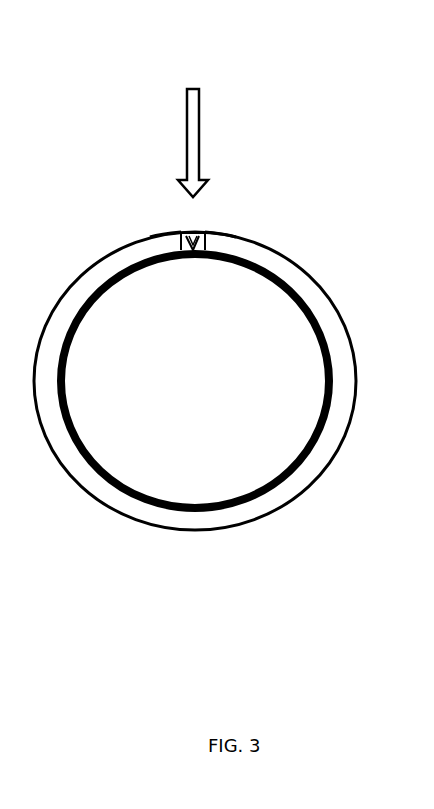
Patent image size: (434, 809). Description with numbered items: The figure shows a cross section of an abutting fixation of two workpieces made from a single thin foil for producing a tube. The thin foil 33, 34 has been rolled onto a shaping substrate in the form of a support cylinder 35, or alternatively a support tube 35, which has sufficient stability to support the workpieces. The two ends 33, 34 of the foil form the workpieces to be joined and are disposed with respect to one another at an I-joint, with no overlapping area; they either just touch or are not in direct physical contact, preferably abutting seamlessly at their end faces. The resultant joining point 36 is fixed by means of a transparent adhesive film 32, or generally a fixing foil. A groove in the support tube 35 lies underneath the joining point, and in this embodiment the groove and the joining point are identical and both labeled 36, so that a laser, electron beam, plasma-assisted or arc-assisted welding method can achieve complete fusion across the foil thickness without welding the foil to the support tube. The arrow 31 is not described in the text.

The applied force / pressing direction 31 is at (205, 112).
The transparent adhesive film 32 is at (188, 232).
The end of thin foil 33 is at (222, 236).
The end of thin foil 34 is at (162, 234).
The support cylinder 35 is at (197, 516).
The joining point 36 is at (195, 255).